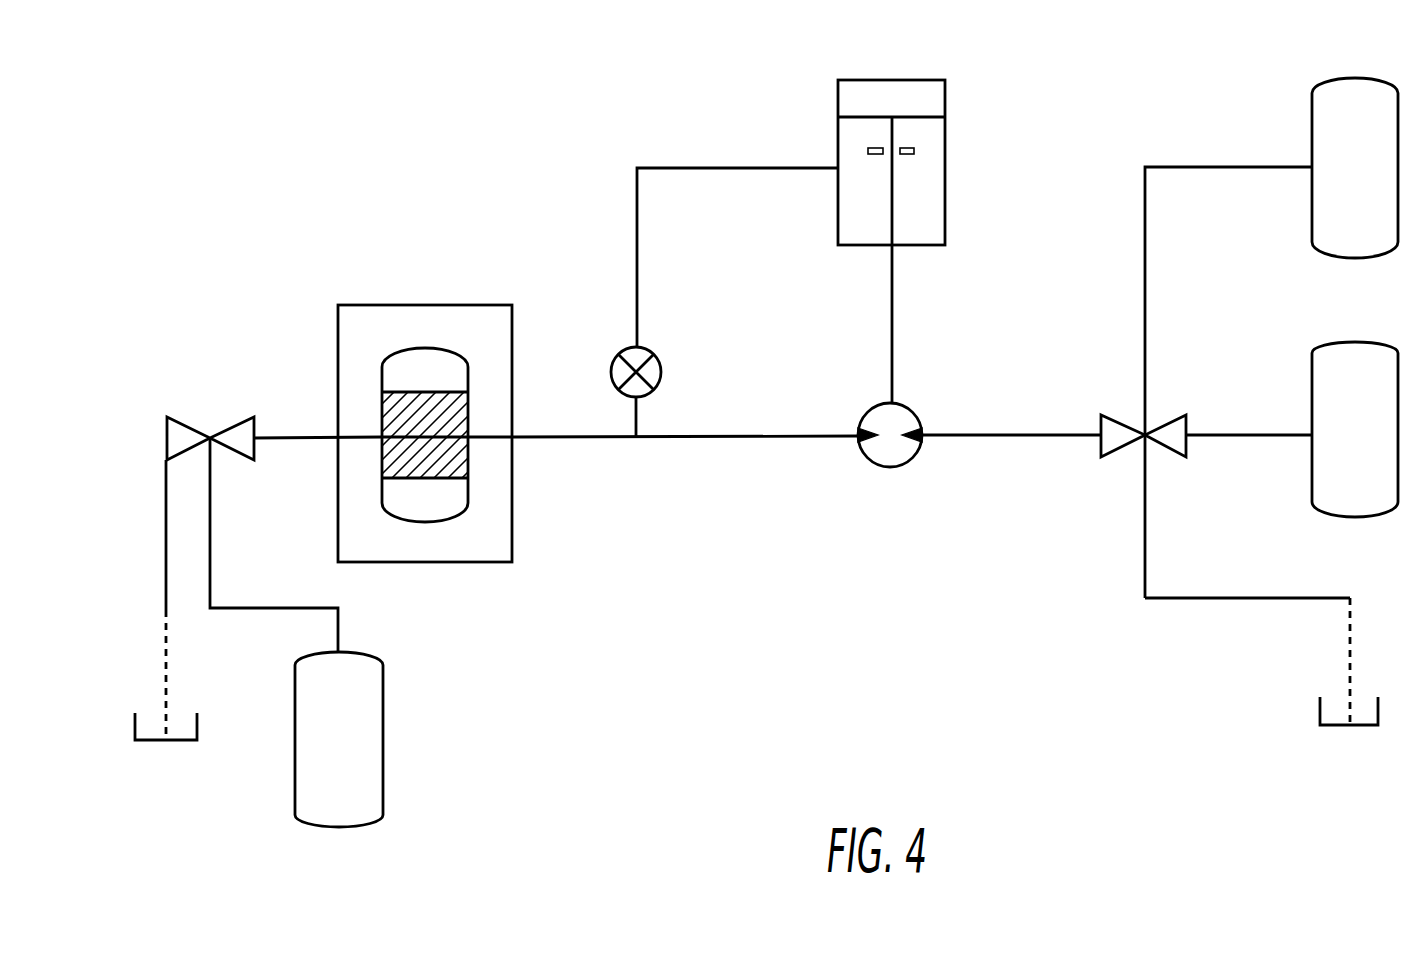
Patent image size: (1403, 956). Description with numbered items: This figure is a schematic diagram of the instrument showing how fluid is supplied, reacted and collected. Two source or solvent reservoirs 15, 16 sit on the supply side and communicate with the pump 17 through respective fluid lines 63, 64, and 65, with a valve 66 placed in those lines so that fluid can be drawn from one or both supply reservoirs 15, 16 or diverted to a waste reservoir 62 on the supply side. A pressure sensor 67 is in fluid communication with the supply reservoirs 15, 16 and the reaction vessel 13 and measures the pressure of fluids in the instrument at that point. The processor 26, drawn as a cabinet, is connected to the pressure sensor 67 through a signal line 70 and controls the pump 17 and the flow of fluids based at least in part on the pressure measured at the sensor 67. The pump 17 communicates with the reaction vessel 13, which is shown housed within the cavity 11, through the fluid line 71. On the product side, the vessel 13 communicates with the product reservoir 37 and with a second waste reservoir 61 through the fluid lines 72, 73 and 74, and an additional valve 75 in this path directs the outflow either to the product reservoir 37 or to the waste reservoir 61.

The cavity 11 is at (452, 305).
The reaction vessel 13 is at (425, 348).
The source or solvent reservoir 15 is at (1367, 177).
The source or solvent reservoir 16 is at (1364, 442).
The pump 17 is at (890, 468).
The processor 26 is at (893, 80).
The product reservoir 37 is at (351, 766).
The waste reservoir 61 is at (183, 745).
The waste reservoir 62 is at (1372, 728).
The fluid line 63 is at (1250, 167).
The fluid line 64 is at (1293, 435).
The fluid line 65 is at (1057, 435).
The valve 66 is at (1122, 450).
The pressure sensor 67 is at (648, 352).
The signal line 70 is at (781, 168).
The fluid line 71 is at (791, 437).
The fluid line 72 is at (320, 437).
The fluid line 73 is at (211, 580).
The fluid line 74 is at (165, 578).
The valve 75 is at (235, 418).